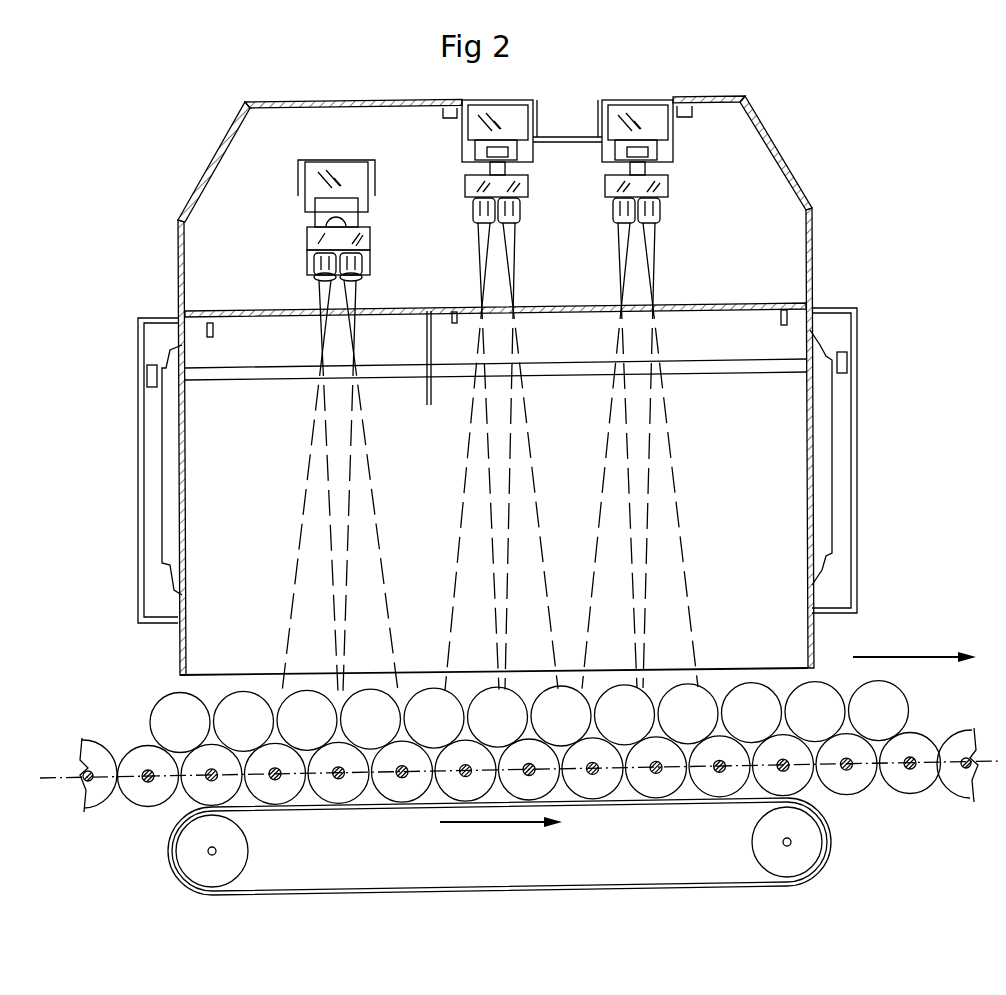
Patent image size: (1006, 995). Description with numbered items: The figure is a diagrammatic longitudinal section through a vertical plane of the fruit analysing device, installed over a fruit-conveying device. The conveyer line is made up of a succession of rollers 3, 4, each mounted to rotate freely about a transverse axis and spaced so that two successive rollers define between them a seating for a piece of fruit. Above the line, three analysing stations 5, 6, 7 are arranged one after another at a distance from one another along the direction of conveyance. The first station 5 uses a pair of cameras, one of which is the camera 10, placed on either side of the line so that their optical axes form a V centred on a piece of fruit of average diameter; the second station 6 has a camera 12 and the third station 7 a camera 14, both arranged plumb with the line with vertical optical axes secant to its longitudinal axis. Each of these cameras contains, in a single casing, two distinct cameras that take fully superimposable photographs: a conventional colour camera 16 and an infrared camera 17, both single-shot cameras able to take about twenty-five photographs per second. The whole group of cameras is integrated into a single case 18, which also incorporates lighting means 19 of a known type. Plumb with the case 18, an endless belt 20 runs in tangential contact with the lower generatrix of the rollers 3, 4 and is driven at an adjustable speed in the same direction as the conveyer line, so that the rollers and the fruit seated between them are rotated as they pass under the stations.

The roller 3 is at (80, 800).
The roller 4 is at (142, 792).
The first analysing station 5 is at (329, 150).
The second analysing station 6 is at (484, 90).
The third analysing station 7 is at (633, 88).
The camera 10 is at (368, 237).
The camera 12 is at (510, 113).
The camera 14 is at (647, 118).
The conventional (RVB) camera 16 is at (313, 262).
The infrared camera 17 is at (354, 280).
The case 18 is at (813, 253).
The lighting means 19 is at (263, 372).
The endless belt 20 is at (572, 773).